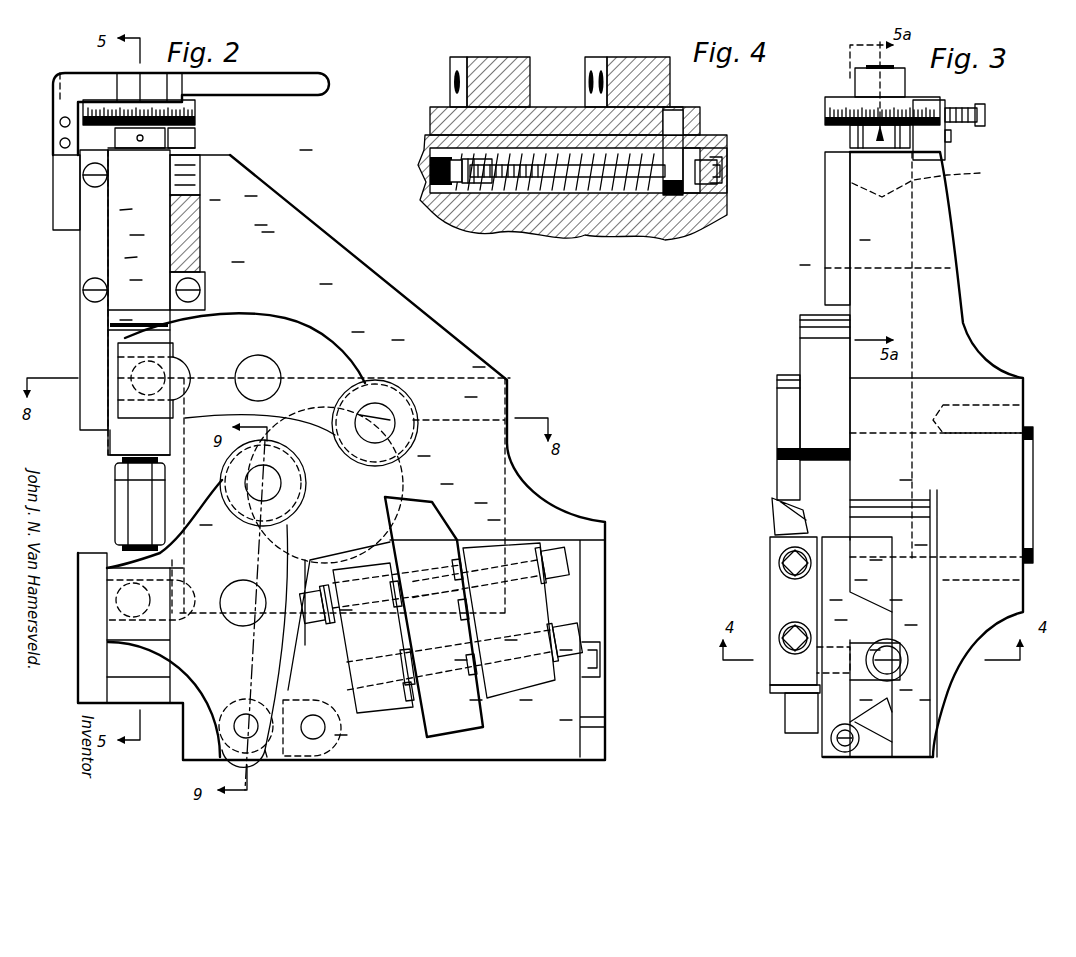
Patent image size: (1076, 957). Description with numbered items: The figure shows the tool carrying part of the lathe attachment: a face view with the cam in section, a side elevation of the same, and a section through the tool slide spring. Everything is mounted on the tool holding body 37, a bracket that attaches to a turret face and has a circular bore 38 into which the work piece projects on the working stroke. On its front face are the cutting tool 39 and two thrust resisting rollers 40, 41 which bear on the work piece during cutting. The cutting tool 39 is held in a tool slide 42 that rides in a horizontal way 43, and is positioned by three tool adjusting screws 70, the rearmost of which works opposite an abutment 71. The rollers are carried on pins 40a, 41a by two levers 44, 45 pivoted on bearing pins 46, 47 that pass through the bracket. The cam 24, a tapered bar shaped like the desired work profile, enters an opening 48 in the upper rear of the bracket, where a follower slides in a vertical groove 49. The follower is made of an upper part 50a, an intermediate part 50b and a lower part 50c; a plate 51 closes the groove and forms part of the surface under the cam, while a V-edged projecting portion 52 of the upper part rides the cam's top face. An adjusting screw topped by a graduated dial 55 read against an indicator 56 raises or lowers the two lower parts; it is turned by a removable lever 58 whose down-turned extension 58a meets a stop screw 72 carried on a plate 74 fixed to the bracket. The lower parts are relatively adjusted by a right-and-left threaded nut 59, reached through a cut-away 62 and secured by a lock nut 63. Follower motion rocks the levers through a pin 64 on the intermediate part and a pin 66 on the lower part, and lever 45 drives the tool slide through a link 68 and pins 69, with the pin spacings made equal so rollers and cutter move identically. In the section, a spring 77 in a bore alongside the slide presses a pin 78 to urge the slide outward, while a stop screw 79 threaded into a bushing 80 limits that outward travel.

In FIG. 2, the cam member 24 is at (197, 248).
In FIG. 2, the tool holding body 37 is at (470, 350).
In FIG. 4, the tool holding body 37 is at (587, 233).
In FIG. 3, the tool holding body 37 is at (950, 297).
In FIG. 2, the circular bore 38 is at (400, 477).
In FIG. 2, the cutting tool 39 is at (433, 517).
In FIG. 3, the cutting tool 39 is at (780, 520).
In FIG. 2, the thrust resisting roller 40 is at (408, 408).
In FIG. 2, the pin 40a is at (380, 412).
In FIG. 2, the thrust resisting roller 41 is at (298, 507).
In FIG. 2, the pin 41a is at (273, 480).
In FIG. 2, the tool slide 42 is at (553, 743).
In FIG. 4, the tool slide 42 is at (667, 85).
In FIG. 3, the tool slide 42 is at (773, 587).
In FIG. 3, the way 43 is at (842, 618).
In FIG. 2, the lever 44 is at (330, 343).
In FIG. 2, the lever 45 is at (255, 615).
In FIG. 2, the bearing pin 46 is at (260, 357).
In FIG. 2, the bearing pin 47 is at (225, 615).
In FIG. 2, the opening 48 is at (200, 225).
In FIG. 2, the vertical groove 49 is at (110, 263).
In FIG. 2, the upper follower part 50a is at (190, 175).
In FIG. 2, the intermediate follower part 50b is at (118, 443).
In FIG. 2, the lower follower part 50c is at (118, 660).
In FIG. 2, the plate 51 is at (78, 243).
In FIG. 3, the plate 51 is at (833, 237).
In FIG. 2, the laterally projecting portion 52 is at (195, 192).
In FIG. 3, the laterally projecting portion 52 is at (926, 181).
In FIG. 2, the dial 55 is at (196, 107).
In FIG. 3, the dial 55 is at (830, 108).
In FIG. 2, the indicator 56 is at (197, 133).
In FIG. 3, the indicator 56 is at (877, 133).
In FIG. 2, the lever 58 is at (255, 74).
In FIG. 2, the down-turned extension 58a is at (62, 110).
In FIG. 2, the nut 59 is at (120, 502).
In FIG. 2, the cut-away portion 62 is at (92, 553).
In FIG. 2, the lock nut 63 is at (118, 472).
In FIG. 2, the pin 64 is at (118, 362).
In FIG. 2, the pin 66 is at (123, 600).
In FIG. 2, the link 68 is at (277, 745).
In FIG. 2, the pins 69 is at (233, 727).
In FIG. 2, the tool adjusting screws 70 is at (555, 548).
In FIG. 2, the abutment 71 is at (403, 685).
In FIG. 3, the stop screw 72 is at (983, 110).
In FIG. 2, the plate 74 is at (58, 195).
In FIG. 4, the spring 77 is at (548, 200).
In FIG. 2, the pin 78 is at (545, 652).
In FIG. 4, the pin 78 is at (667, 197).
In FIG. 4, the stop screw 79 is at (727, 177).
In FIG. 4, the bushing 80 is at (490, 197).